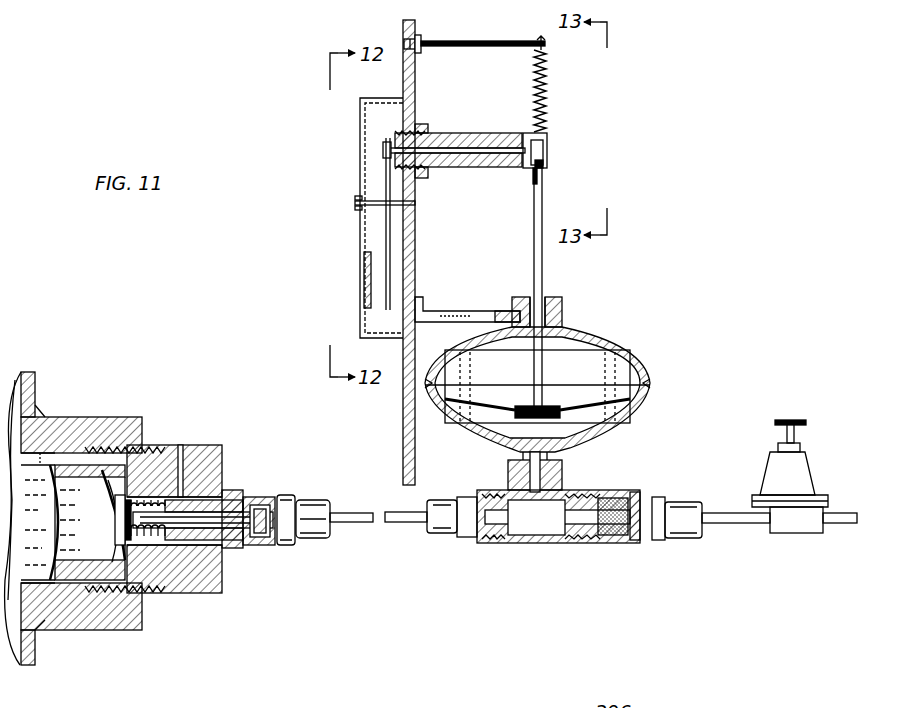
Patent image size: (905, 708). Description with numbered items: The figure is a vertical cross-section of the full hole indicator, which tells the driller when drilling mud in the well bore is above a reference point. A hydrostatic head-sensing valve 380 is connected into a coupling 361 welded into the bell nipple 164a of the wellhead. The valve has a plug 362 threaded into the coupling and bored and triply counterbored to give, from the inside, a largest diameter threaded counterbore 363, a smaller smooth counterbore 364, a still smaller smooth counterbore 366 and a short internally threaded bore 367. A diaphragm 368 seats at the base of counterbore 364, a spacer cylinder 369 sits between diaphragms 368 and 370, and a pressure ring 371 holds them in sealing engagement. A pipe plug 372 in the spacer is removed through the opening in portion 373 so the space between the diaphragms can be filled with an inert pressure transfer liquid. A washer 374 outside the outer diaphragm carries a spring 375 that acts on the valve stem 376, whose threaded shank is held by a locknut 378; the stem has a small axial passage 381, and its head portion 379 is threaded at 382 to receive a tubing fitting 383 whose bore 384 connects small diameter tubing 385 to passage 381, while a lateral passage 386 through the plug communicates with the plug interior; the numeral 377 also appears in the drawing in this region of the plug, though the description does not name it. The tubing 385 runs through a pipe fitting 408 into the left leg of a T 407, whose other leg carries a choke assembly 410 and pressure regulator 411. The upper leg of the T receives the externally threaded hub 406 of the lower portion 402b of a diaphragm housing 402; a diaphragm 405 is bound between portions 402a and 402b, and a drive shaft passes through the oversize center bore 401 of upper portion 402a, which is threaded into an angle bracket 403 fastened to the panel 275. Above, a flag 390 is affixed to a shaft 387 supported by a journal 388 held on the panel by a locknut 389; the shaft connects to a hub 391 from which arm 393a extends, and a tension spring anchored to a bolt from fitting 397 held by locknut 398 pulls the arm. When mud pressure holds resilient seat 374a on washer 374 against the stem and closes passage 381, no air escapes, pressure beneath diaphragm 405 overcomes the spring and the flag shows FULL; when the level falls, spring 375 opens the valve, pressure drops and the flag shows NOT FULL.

The bell nipple 164a is at (56, 362).
The panel 275 is at (416, 258).
The coupling 361 is at (90, 593).
The plug 362 is at (198, 595).
The largest diameter threaded counterbore 363 is at (46, 538).
The smooth counterbore 364 is at (118, 520).
The still smaller diameter smooth counterbore 366 is at (190, 597).
The internally threaded bore 367 is at (232, 550).
The diaphragm 368 is at (115, 508).
The spacer cylinder 369 is at (107, 472).
The diaphragm 370 is at (8, 560).
The pressure ring 371 is at (52, 585).
The pipe plug 372 is at (76, 464).
The portion of the plug 373 is at (53, 475).
The washer 374 is at (122, 498).
The resilient seat 374a is at (128, 545).
The spring 375 is at (122, 582).
The valve stem 376 is at (200, 527).
The bore 377 is at (150, 597).
The locknut 378 is at (250, 548).
The head portion 379 is at (262, 547).
The hydrostatic head-sensing valve 380 is at (306, 487).
The axial bore 381 is at (227, 490).
The internally threaded counterbore 382 is at (272, 546).
The tubing fitting 383 is at (320, 503).
The bore 384 is at (257, 508).
The small diameter tubing 385 is at (415, 523).
The lateral passage 386 is at (182, 480).
The shaft 387 is at (465, 141).
The journal 388 is at (490, 168).
The locknut 389 is at (425, 127).
The flag 390 is at (387, 178).
The hub 391 is at (529, 132).
The arm 393a is at (548, 150).
The fitting 397 is at (405, 44).
The locknut 398 is at (420, 42).
The oversize center bore 401 is at (554, 302).
The diaphragm housing 402 is at (575, 385).
The upper portion of diaphragm housing 402a is at (618, 340).
The lower portion of diaphragm housing 402b is at (625, 433).
The angle bracket 403 is at (476, 310).
The diaphragm 405 is at (590, 405).
The externally threaded hub 406 is at (560, 473).
The T 407 is at (551, 545).
The pipe fitting 408 is at (449, 535).
The choke assembly 410 is at (635, 547).
The pressure regulator 411 is at (800, 535).